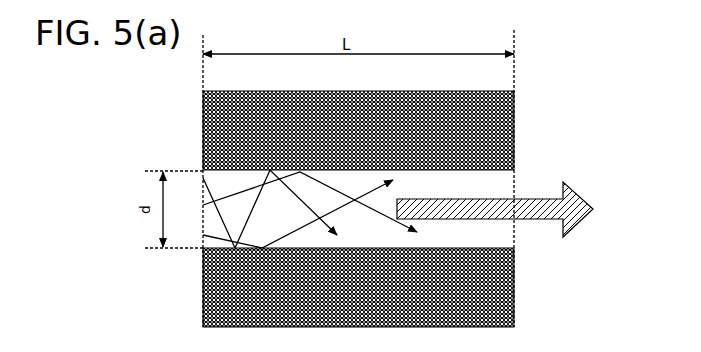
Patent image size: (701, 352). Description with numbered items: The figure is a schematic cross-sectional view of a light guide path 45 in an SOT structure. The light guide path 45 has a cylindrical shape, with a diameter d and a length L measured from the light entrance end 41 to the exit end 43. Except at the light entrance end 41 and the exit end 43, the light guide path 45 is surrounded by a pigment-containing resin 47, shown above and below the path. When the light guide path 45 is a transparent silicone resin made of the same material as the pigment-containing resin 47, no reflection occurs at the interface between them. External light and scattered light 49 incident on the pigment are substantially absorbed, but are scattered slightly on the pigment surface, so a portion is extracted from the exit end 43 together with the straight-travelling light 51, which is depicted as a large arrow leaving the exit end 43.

The light entrance end 41 is at (203, 237).
The exit end 43 is at (517, 169).
The light guide path 45 is at (495, 235).
The pigment-containing resin 47 is at (515, 120).
The scattered light 49 is at (203, 200).
The straight-travelling light 51 is at (535, 196).